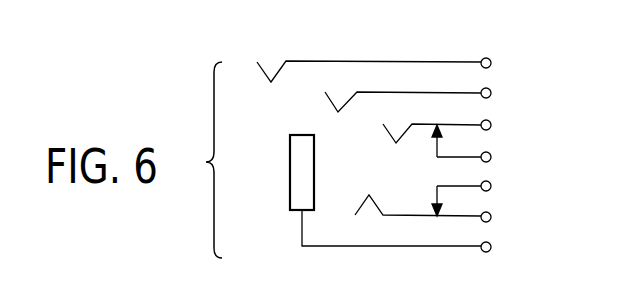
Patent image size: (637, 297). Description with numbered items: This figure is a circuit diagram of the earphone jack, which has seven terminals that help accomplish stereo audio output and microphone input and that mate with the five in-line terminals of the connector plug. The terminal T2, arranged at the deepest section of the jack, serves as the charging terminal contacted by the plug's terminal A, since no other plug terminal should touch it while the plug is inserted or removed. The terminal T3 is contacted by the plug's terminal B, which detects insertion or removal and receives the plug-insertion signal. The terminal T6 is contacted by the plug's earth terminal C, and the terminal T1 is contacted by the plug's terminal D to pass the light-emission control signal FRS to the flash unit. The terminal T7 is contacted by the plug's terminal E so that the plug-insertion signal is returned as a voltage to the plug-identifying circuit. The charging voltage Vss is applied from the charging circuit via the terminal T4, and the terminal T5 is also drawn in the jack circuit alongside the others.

The terminal T1 is at (415, 236).
The terminal T2 is at (455, 126).
The terminal T3 is at (441, 213).
The terminal T4 is at (480, 148).
The terminal T5 is at (480, 193).
The terminal T6 is at (426, 95).
The terminal T7 is at (392, 65).